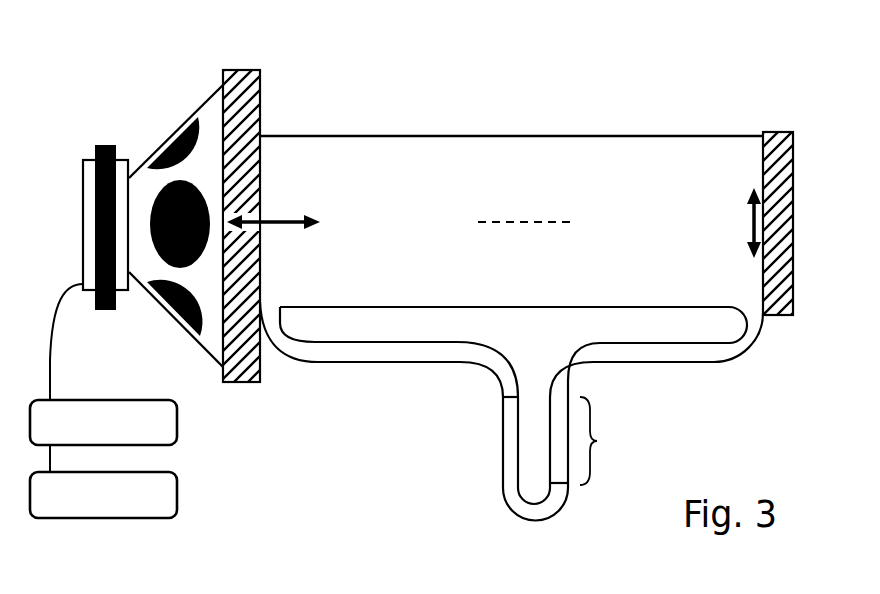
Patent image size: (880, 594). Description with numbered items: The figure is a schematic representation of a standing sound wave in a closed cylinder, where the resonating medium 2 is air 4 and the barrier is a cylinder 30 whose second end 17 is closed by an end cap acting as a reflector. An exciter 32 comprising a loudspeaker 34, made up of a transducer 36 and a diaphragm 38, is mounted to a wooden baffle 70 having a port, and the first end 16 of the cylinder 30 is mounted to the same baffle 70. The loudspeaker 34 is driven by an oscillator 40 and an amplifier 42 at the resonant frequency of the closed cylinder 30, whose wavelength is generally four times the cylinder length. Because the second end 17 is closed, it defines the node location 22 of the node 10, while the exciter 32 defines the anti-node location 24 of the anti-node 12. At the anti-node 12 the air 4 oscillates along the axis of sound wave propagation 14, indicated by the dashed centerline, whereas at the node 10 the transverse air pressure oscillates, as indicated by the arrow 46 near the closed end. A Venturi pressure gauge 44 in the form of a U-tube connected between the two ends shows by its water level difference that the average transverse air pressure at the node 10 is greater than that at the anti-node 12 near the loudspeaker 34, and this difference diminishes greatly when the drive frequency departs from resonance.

The resonating medium 2 is at (437, 134).
The air 4 is at (412, 185).
The node 10 is at (727, 176).
The anti-node 12 is at (309, 137).
The axis of sound wave propagation 14 is at (502, 221).
The first end 16 is at (270, 152).
The second end 17 is at (773, 137).
The node location 22 is at (755, 163).
The anti-node location 24 is at (268, 220).
The cylinder 30 is at (553, 135).
The exciter 32 is at (135, 188).
The loudspeaker 34 is at (223, 360).
The transducer 36 is at (102, 145).
The diaphragm 38 is at (178, 132).
The oscillator 40 is at (103, 495).
The amplifier 42 is at (103, 422).
The pressure gauge 44 is at (510, 480).
The arrow 46 is at (752, 223).
The baffle 70 is at (243, 70).